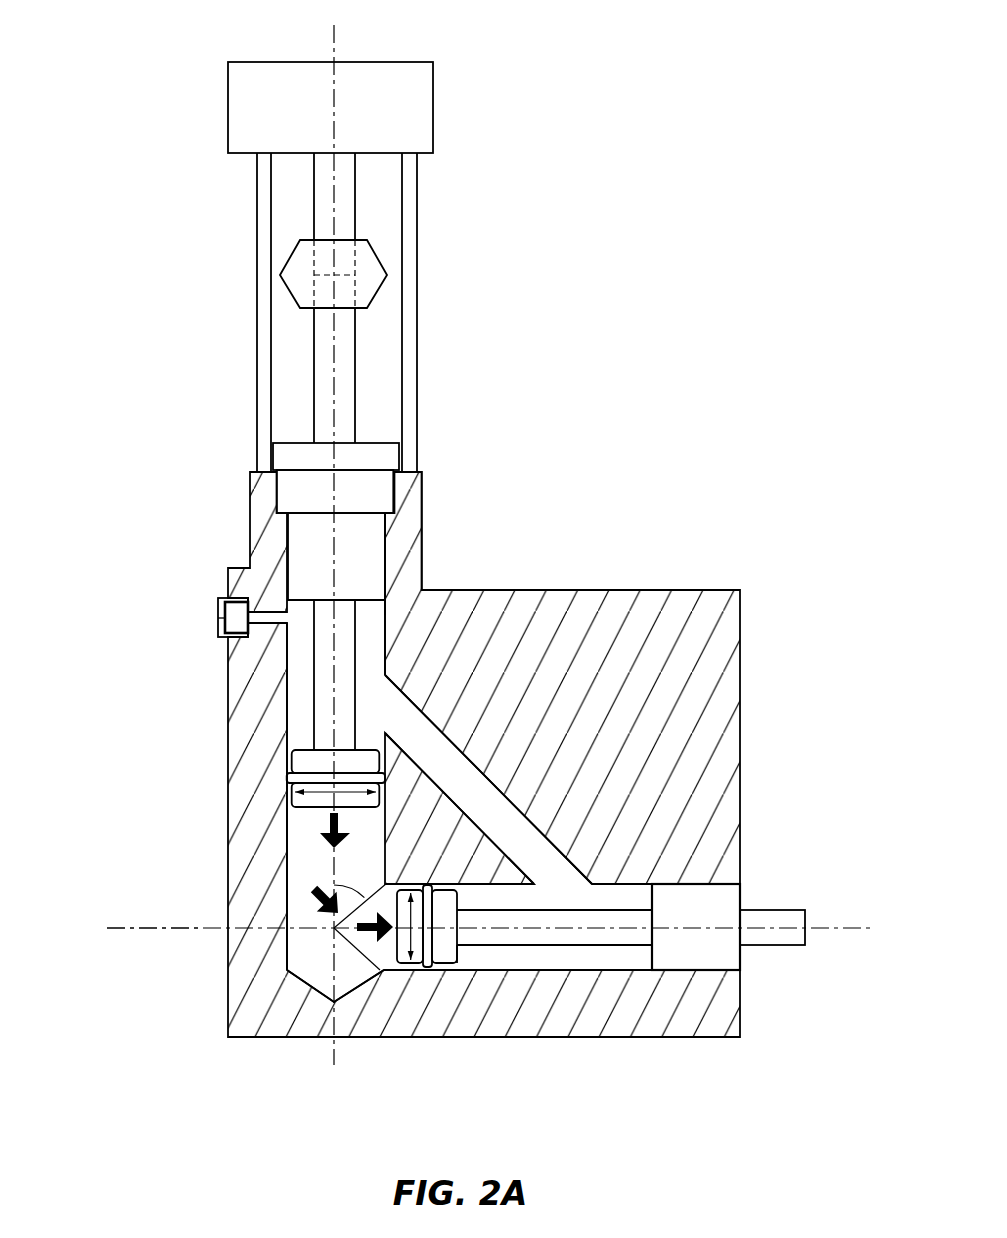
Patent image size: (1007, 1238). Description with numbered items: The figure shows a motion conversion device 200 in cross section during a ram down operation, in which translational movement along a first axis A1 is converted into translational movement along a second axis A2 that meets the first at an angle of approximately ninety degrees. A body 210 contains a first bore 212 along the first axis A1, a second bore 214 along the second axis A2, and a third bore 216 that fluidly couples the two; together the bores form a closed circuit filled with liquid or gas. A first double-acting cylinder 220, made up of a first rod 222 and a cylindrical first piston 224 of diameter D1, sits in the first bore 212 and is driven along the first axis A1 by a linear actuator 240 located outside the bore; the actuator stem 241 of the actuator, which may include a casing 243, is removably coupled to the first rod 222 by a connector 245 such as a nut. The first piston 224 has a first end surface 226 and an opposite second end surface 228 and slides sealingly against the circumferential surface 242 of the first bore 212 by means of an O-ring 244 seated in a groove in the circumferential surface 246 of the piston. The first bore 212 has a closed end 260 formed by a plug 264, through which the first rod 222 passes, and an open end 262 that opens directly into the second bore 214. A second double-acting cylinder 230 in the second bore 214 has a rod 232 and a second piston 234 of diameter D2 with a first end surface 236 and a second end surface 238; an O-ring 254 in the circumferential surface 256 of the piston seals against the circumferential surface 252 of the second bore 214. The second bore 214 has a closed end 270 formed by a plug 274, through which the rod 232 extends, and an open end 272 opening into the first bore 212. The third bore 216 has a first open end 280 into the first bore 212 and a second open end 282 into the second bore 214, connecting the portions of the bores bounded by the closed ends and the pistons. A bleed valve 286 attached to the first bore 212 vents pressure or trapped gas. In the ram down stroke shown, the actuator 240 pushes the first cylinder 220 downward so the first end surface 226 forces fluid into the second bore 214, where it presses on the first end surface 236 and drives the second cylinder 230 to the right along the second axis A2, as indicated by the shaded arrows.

The motion conversion device 200 is at (157, 437).
The body 210 is at (650, 592).
The first bore 212 is at (298, 868).
The second bore 214 is at (543, 962).
The third bore 216 is at (528, 592).
The first double-acting cylinder 220 is at (300, 706).
The first rod 222 is at (325, 372).
The first piston 224 is at (290, 775).
The first end surface 226 is at (300, 846).
The second end surface 228 is at (298, 713).
The second double-acting cylinder 230 is at (575, 952).
The rod of second double-acting cylinder 232 is at (641, 938).
The second piston 234 is at (428, 968).
The first end surface 236 is at (401, 966).
The second end surface 238 is at (483, 960).
The linear actuator 240 is at (464, 97).
The actuator stem 241 is at (345, 203).
The circumferential surface of first bore 242 is at (296, 808).
The casing 243 is at (228, 106).
The O-ring 244 is at (290, 782).
The connector 245 is at (291, 258).
The circumferential surface of first piston 246 is at (293, 748).
The circumferential surface of second bore 252 is at (607, 962).
The O-ring 254 is at (446, 966).
The circumferential surface of second piston 256 is at (458, 972).
The closed end 260 is at (388, 603).
The open end 262 is at (298, 890).
The plug 264 is at (303, 528).
The closed end 270 is at (643, 893).
The open end 272 is at (330, 988).
The plug 274 is at (731, 956).
The first open end 280 is at (372, 600).
The second open end 282 is at (570, 868).
The bleed valve 286 is at (220, 596).
The first axis A1 is at (340, 273).
The second axis A2 is at (153, 944).
The diameter of first piston D1 is at (321, 805).
The diameter of second piston D2 is at (411, 965).